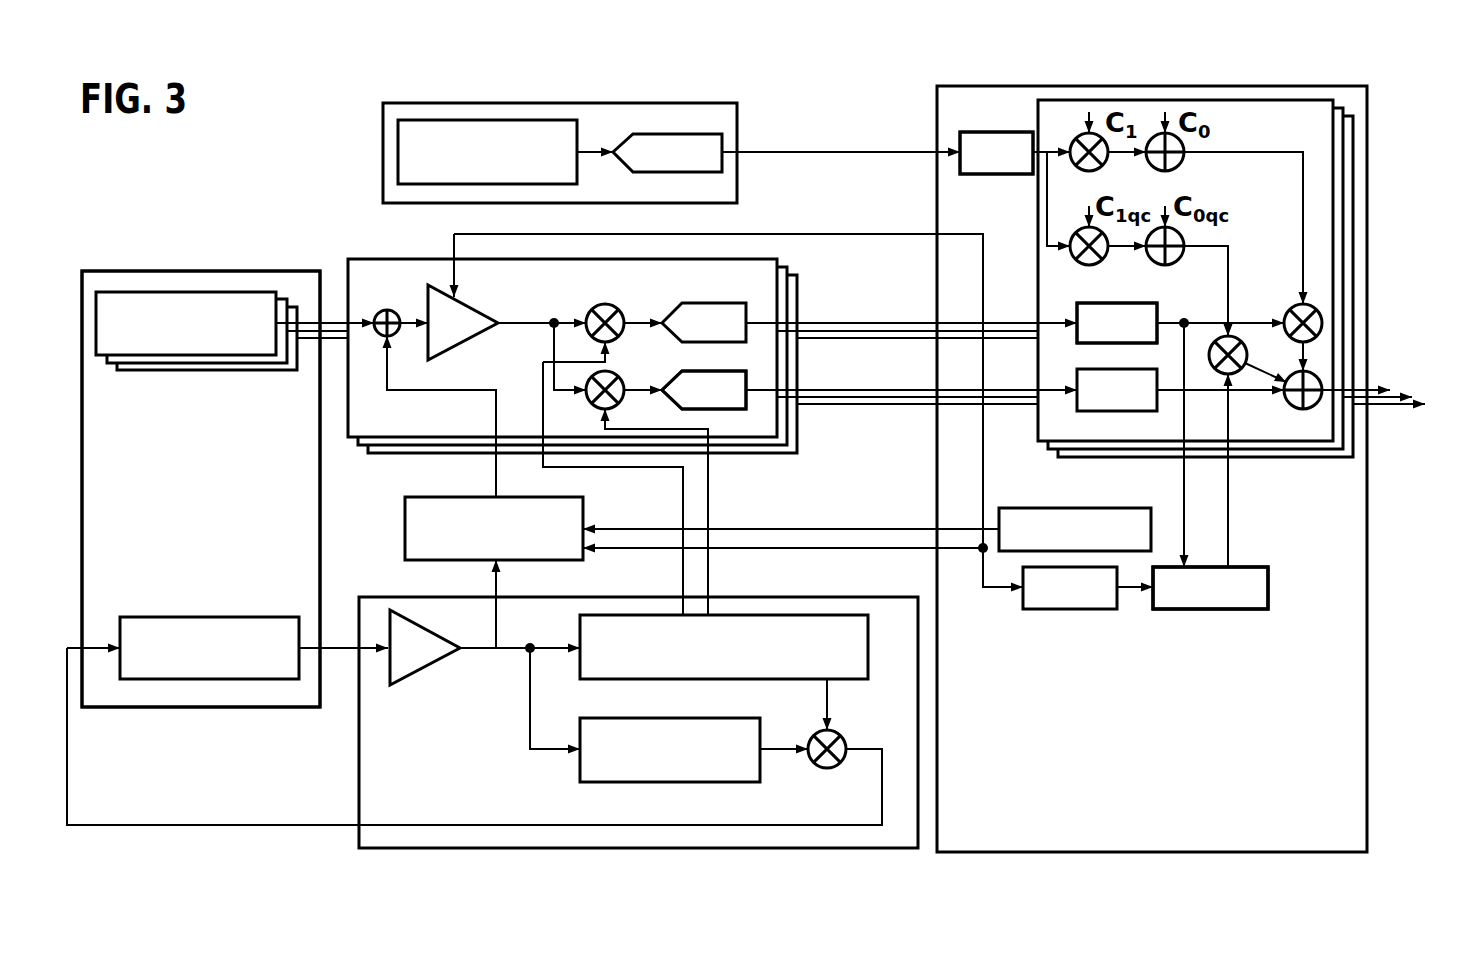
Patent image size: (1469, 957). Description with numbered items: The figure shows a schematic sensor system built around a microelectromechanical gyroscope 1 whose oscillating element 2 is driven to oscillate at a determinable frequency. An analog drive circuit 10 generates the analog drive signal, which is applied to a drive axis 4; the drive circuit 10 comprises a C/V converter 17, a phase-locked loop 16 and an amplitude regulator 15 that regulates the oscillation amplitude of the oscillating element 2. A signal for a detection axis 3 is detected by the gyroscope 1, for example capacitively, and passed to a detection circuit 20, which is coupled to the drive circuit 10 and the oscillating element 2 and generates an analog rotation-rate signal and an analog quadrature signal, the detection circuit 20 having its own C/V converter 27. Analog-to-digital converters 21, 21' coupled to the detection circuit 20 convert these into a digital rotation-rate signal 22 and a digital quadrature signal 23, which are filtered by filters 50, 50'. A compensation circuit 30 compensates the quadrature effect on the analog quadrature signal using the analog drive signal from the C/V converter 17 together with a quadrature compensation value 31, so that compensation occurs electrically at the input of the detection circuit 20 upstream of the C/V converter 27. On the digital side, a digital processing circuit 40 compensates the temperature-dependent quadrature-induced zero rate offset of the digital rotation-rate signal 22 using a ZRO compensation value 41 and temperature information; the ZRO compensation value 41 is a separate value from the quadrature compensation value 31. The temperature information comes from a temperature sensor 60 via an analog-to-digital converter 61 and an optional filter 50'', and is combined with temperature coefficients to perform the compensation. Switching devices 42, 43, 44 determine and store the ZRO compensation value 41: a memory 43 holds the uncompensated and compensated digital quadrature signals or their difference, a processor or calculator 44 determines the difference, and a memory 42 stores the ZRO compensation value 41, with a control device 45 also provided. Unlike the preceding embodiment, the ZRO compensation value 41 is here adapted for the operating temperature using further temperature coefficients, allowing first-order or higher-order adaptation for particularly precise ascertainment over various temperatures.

The microelectromechanical gyroscope 1 is at (153, 281).
The oscillating element 2 is at (201, 489).
The detection axis 3 is at (178, 338).
The drive axis 4 is at (178, 664).
The drive circuit 10 is at (375, 798).
The amplitude regulator 15 is at (685, 765).
The phase-locked loop 16 is at (739, 662).
The C/V converter 17 is at (413, 657).
The detection circuit 20 is at (395, 428).
The analog-to-digital converter 21 is at (765, 302).
The analog-to-digital converter 21' is at (715, 443).
The digital rotation-rate signal 22 is at (913, 394).
The digital quadrature signal 23 is at (913, 320).
The C/V converter 27 is at (437, 305).
The compensation circuit 30 is at (509, 543).
The quadrature compensation value 31 is at (1090, 545).
The digital processing circuit 40 is at (1322, 818).
The ZRO compensation value 41 is at (1257, 350).
The memory 42 is at (1225, 598).
The memory 43 is at (1210, 588).
The processor or calculator 44 is at (1210, 588).
The control device 45 is at (1073, 598).
The filter 50 is at (1117, 390).
The filter 50' is at (1117, 323).
The filter 50'' is at (996, 153).
The temperature sensor 60 is at (413, 149).
The analog-to-digital converter 61 is at (682, 140).